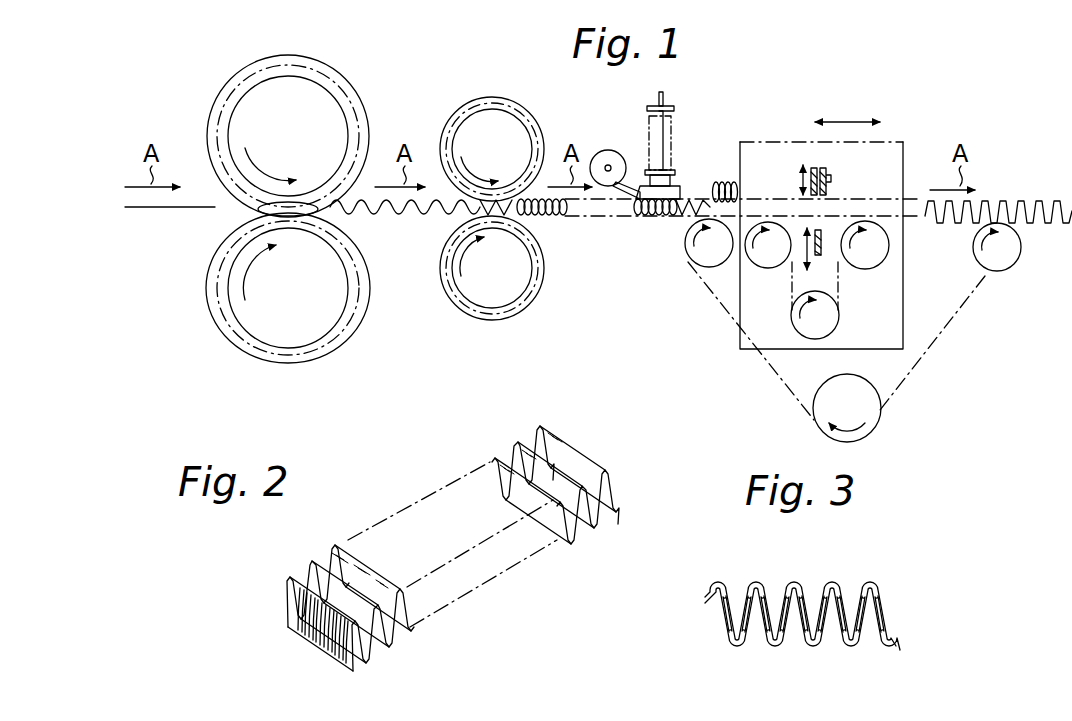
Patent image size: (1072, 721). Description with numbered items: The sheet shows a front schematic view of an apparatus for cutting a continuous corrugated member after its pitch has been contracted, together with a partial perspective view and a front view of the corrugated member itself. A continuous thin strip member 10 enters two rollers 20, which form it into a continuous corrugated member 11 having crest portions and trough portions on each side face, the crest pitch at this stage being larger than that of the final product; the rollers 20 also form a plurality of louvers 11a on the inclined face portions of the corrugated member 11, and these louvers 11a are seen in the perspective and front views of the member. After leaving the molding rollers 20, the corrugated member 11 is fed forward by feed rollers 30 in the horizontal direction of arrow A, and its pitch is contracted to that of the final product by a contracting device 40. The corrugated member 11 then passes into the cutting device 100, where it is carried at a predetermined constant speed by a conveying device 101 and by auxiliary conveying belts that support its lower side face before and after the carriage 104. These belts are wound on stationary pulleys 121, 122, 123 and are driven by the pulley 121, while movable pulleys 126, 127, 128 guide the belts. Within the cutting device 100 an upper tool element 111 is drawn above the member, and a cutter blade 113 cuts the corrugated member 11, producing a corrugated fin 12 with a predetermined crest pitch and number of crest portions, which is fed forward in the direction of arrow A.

In FIG. 1, the continuous thin strip member 10 is at (156, 212).
In FIG. 1, the rollers 20 is at (347, 80).
In FIG. 1, the continuous corrugated member 11 is at (421, 220).
In FIG. 2, the continuous corrugated member 11 is at (574, 450).
In FIG. 3, the continuous corrugated member 11 is at (797, 582).
In FIG. 1, the feed rollers 30 is at (518, 108).
In FIG. 1, the contracting device 40 is at (684, 134).
In FIG. 1, the conveying device 101 is at (722, 182).
In FIG. 1, the cutting device 100 is at (882, 100).
In FIG. 1, the carriage 104 is at (887, 140).
In FIG. 1, the upper cutting tool 111 is at (838, 168).
In FIG. 1, the cutter blade 113 is at (845, 228).
In FIG. 1, the corrugated fin 12 is at (1014, 198).
In FIG. 1, the stationary pulley 121 is at (878, 410).
In FIG. 1, the stationary pulley 122 is at (688, 254).
In FIG. 1, the stationary pulley 123 is at (984, 264).
In FIG. 1, the movable pulley 126 is at (766, 268).
In FIG. 1, the movable pulley 127 is at (827, 316).
In FIG. 1, the movable pulley 128 is at (884, 246).
In FIG. 2, the louvers 11a is at (302, 618).
In FIG. 3, the louvers 11a is at (738, 590).